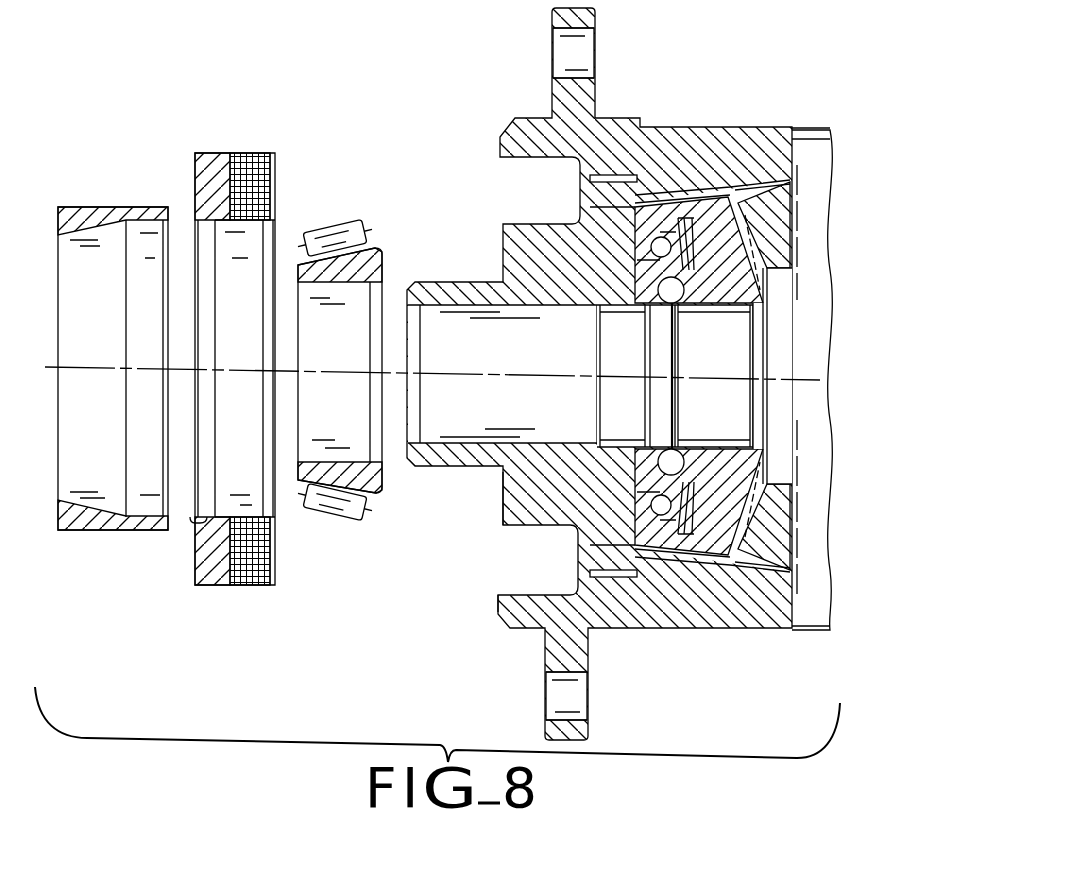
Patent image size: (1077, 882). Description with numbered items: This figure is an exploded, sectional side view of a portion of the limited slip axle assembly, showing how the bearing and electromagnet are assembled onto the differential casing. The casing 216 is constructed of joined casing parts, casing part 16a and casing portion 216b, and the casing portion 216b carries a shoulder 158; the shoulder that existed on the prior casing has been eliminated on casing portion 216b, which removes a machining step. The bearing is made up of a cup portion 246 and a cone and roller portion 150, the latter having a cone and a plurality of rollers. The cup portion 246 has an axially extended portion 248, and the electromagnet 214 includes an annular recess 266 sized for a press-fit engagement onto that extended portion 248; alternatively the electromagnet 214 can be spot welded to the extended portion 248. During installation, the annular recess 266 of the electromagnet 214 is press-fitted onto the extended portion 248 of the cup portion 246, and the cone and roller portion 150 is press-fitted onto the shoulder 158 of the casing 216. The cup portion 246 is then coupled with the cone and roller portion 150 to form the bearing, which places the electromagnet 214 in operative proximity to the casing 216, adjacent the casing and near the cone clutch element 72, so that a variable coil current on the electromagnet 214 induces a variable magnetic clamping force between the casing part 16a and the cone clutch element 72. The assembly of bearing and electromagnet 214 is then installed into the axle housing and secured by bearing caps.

The cup portion 246 is at (100, 210).
The axially extended portion 248 is at (155, 210).
The electromagnet 214 is at (218, 152).
The annular recess 266 is at (200, 523).
The cone and roller portion 150 is at (383, 248).
The shoulder 158 is at (458, 466).
The casing part 16a is at (672, 133).
The casing 216 is at (755, 101).
The casing portion 216b is at (510, 517).
The cone clutch element 72 is at (705, 628).